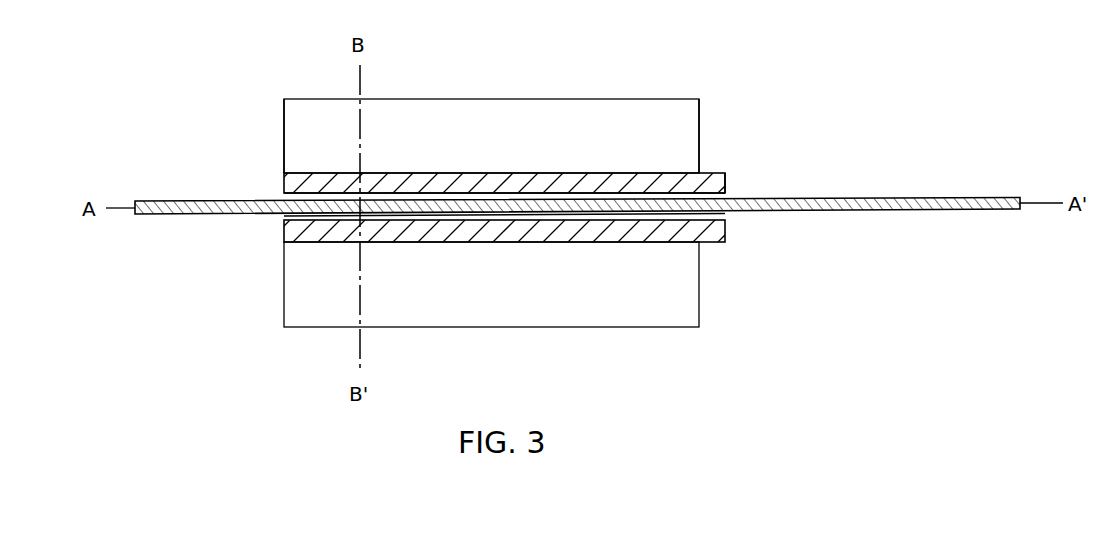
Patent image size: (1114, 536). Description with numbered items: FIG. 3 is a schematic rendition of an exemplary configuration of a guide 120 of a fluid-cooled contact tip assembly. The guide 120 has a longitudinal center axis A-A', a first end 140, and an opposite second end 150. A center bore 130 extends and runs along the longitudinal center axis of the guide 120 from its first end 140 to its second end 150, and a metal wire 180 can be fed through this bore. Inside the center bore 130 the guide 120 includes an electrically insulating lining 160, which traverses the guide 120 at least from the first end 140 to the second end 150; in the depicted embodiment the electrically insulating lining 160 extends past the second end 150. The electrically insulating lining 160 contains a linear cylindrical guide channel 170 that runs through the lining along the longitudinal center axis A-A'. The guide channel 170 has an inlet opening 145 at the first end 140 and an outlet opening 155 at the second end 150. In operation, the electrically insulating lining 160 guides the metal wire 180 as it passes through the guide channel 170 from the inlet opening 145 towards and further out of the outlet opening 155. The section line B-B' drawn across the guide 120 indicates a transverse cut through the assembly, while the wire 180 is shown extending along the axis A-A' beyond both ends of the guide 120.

The guide 120 is at (623, 113).
The center bore 130 is at (513, 173).
The first end 140 is at (284, 135).
The inlet opening 145 is at (284, 194).
The second end 150 is at (699, 107).
The outlet opening 155 is at (722, 194).
The electrically insulating lining 160 is at (426, 178).
The guide channel 170 is at (387, 217).
The metal wire 180 is at (947, 211).